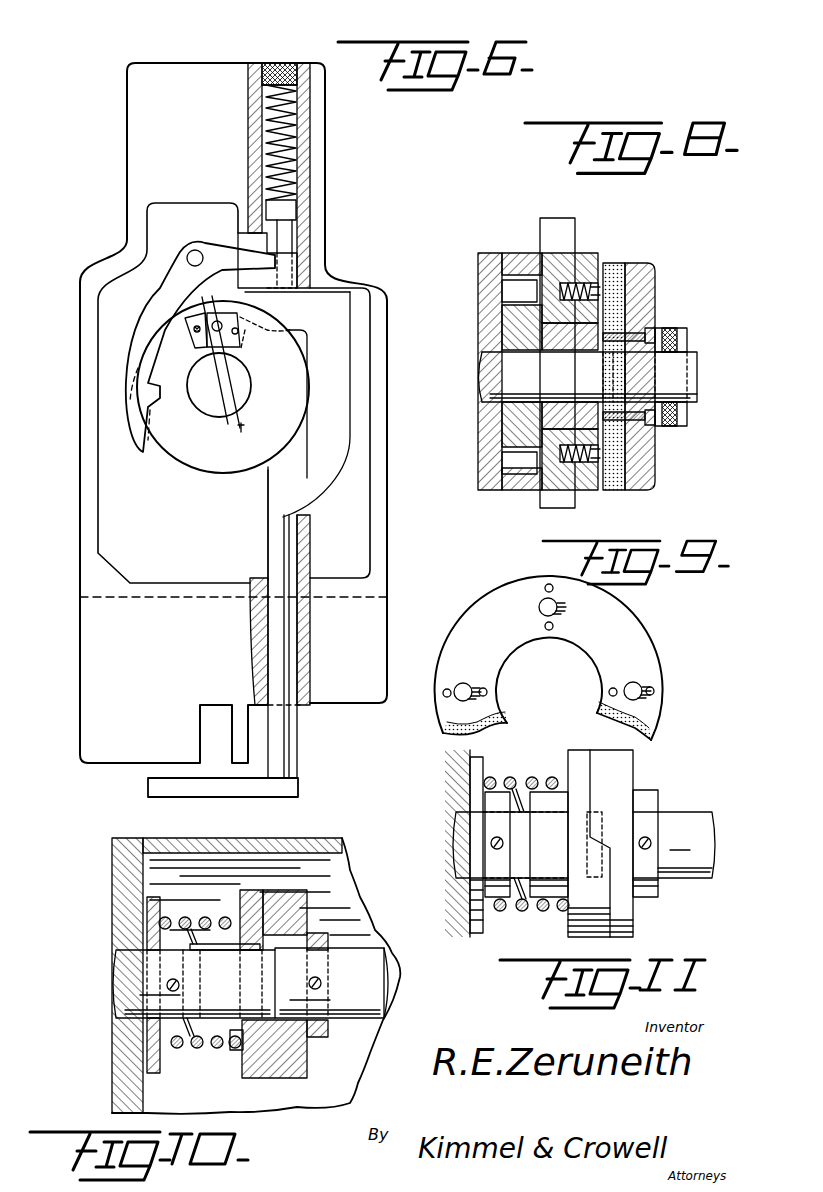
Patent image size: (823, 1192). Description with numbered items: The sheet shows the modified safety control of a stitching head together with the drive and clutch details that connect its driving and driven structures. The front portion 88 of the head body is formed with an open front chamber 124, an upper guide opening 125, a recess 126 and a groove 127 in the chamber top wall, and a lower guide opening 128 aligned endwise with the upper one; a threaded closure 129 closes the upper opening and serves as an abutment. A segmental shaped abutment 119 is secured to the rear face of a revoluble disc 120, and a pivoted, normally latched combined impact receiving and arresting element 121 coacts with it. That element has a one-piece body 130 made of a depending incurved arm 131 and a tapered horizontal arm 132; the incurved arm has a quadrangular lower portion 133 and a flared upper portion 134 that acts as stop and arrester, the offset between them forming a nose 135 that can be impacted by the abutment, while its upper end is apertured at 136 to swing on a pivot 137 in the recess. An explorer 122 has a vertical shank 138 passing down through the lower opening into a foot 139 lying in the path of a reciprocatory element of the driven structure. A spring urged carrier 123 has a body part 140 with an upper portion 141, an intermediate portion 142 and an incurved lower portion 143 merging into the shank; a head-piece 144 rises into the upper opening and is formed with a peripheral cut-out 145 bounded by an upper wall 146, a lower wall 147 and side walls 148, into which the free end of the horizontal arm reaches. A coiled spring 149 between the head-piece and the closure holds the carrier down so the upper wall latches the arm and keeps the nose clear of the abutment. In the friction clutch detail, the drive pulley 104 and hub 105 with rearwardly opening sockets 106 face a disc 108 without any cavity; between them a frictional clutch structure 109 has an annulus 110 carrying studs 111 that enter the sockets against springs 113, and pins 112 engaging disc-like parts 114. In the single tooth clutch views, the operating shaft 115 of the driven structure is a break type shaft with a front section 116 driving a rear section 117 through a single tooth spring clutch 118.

In FIG. 6, the front portion 88 is at (97, 637).
In FIG. 8, the drive pulley 104 is at (570, 232).
In FIG. 8, the hub 105 is at (570, 260).
In FIG. 8, the sockets 106 is at (558, 308).
In FIG. 8, the disc 108 is at (657, 302).
In FIG. 8, the frictional clutch structure 109 is at (617, 492).
In FIG. 8, the annulus 110 is at (607, 262).
In FIG. 9, the annulus 110 is at (640, 657).
In FIG. 8, the studs 111 is at (598, 290).
In FIG. 9, the studs 111 is at (557, 605).
In FIG. 8, the pins 112 is at (557, 467).
In FIG. 9, the pins 112 is at (548, 630).
In FIG. 8, the springs 113 is at (490, 468).
In FIG. 8, the disc-like parts 114 is at (660, 262).
In FIG. 11, the operating shaft 115 is at (456, 823).
In FIG. 10, the operating shaft 115 is at (110, 1003).
In FIG. 8, the front section 116 is at (588, 377).
In FIG. 11, the front section 116 is at (683, 818).
In FIG. 10, the front section 116 is at (363, 960).
In FIG. 11, the rear section 117 is at (458, 826).
In FIG. 10, the rear section 117 is at (127, 963).
In FIG. 11, the single tooth spring clutch 118 is at (583, 905).
In FIG. 10, the single tooth spring clutch 118 is at (232, 915).
In FIG. 6, the segmental shaped abutment 119 is at (196, 342).
In FIG. 6, the revoluble disc 120 is at (192, 396).
In FIG. 6, the combined impact receiving and arresting element 121 is at (183, 237).
In FIG. 6, the explorer 122 is at (287, 741).
In FIG. 6, the spring urged carrier 123 is at (340, 333).
In FIG. 6, the open front chamber 124 is at (127, 545).
In FIG. 6, the upper guide opening 125 is at (300, 168).
In FIG. 6, the recess 126 is at (208, 210).
In FIG. 6, the groove 127 is at (300, 263).
In FIG. 6, the lower guide opening 128 is at (300, 667).
In FIG. 6, the threaded closure 129 is at (292, 62).
In FIG. 6, the one-piece body 130 is at (176, 270).
In FIG. 6, the depending incurved arm 131 is at (135, 331).
In FIG. 6, the horizontal arm 132 is at (300, 277).
In FIG. 6, the quadrangular lower portion 133 is at (140, 398).
In FIG. 6, the flared upper portion 134 is at (231, 374).
In FIG. 6, the nose 135 is at (143, 410).
In FIG. 6, the aperture 136 is at (198, 250).
In FIG. 6, the pivot 137 is at (195, 256).
In FIG. 6, the shank 138 is at (287, 623).
In FIG. 6, the foot 139 is at (212, 786).
In FIG. 6, the body part 140 is at (347, 366).
In FIG. 6, the upper portion 141 is at (300, 307).
In FIG. 6, the intermediate portion 142 is at (325, 402).
In FIG. 6, the lower portion 143 is at (310, 477).
In FIG. 6, the head-piece 144 is at (340, 283).
In FIG. 6, the peripheral cut-out 145 is at (300, 222).
In FIG. 6, the upper wall 146 is at (300, 200).
In FIG. 6, the lower wall 147 is at (328, 262).
In FIG. 6, the side walls 148 is at (300, 250).
In FIG. 6, the coiled spring 149 is at (305, 114).